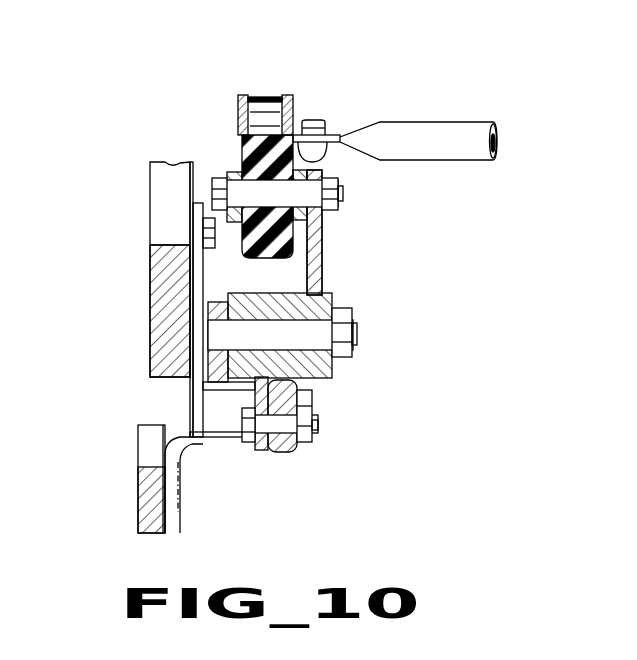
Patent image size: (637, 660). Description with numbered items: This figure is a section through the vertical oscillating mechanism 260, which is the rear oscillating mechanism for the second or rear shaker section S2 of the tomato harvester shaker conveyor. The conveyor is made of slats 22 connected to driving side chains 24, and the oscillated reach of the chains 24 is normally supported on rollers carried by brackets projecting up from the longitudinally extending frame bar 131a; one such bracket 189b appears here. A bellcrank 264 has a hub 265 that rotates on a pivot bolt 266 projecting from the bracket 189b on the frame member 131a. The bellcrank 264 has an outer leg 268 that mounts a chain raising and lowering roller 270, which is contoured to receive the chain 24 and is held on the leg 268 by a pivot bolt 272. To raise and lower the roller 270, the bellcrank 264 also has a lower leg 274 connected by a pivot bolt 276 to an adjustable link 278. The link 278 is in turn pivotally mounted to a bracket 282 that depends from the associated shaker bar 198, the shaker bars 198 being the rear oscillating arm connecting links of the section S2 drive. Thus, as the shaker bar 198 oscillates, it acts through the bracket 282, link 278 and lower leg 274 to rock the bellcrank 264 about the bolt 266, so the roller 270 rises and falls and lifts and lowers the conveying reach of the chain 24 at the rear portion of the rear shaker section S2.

The slats 22 is at (468, 125).
The driving side chains 24 is at (265, 95).
The rear shaker section S2 is at (447, 72).
The vertical oscillating mechanism 260 is at (183, 145).
The chain raising and lowering roller 270 is at (240, 140).
The pivot bolt 272 is at (341, 193).
The outer leg 268 is at (318, 235).
The bellcrank 264 is at (320, 260).
The hub 265 is at (332, 296).
The pivot bolt 266 is at (356, 334).
The shaker bars 198 is at (150, 275).
The bracket 282 is at (192, 384).
The bracket 189b is at (190, 425).
The frame bar 131a is at (138, 492).
The lower leg 274 is at (258, 452).
The pivot bolt 276 is at (318, 430).
The adjustable link 278 is at (284, 453).